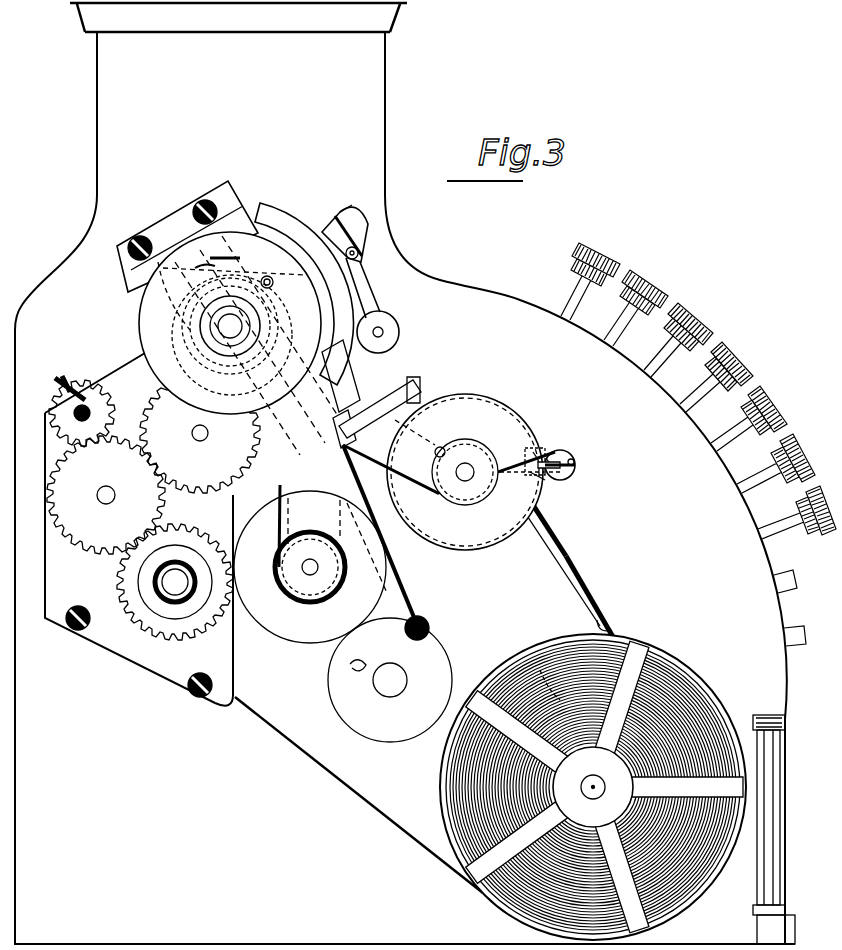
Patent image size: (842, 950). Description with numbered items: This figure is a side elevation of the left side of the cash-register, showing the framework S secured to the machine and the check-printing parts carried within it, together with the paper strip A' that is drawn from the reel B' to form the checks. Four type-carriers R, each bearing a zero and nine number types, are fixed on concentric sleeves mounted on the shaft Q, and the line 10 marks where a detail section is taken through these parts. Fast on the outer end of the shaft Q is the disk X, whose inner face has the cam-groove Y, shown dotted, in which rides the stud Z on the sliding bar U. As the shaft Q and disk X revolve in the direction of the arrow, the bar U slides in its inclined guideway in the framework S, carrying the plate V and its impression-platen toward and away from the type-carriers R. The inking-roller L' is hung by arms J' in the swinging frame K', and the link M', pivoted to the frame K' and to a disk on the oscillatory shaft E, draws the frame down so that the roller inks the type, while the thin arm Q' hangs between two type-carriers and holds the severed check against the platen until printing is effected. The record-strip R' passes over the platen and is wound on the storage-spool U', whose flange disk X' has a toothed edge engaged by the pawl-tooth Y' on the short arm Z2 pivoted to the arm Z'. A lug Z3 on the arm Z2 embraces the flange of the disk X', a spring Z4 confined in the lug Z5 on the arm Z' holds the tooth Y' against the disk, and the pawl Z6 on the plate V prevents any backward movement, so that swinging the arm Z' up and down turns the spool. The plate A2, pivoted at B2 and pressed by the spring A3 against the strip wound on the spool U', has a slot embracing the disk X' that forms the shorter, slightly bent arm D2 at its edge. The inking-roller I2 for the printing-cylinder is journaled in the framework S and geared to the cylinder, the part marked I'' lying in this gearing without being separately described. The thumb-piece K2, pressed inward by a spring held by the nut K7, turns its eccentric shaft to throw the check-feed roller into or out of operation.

The section line 10 is at (190, 272).
The stud Z is at (170, 238).
The framework S is at (282, 646).
The sliding bar U is at (225, 345).
The cam-groove Y is at (179, 303).
The shaft Q is at (230, 326).
The disk X is at (230, 323).
The type-carriers R is at (302, 394).
The swinging frame K' is at (345, 224).
The thin arm Q' is at (387, 216).
The arms J' is at (390, 500).
The inking-roller L' is at (393, 332).
The plate V is at (408, 396).
The pawl Z6 is at (337, 415).
The disk X' is at (465, 461).
The storage-spool U' is at (465, 489).
The record-strip R' is at (449, 480).
The short arm Z2 is at (528, 452).
The lug Z3 is at (530, 475).
The spring Z4 is at (535, 450).
The lug Z5 is at (548, 460).
The pawl-tooth Y' is at (556, 452).
The arm Z' is at (578, 471).
The arm D2 is at (546, 509).
The plate A2 is at (579, 598).
The spring A3 is at (613, 630).
The link M' is at (396, 542).
The oscillatory shaft E is at (390, 680).
The inking-roller I2 is at (96, 401).
The gear wheel I'' is at (106, 495).
The nut K7 is at (165, 580).
The thumb-piece K2 is at (181, 624).
The paper strip A' is at (405, 473).
The reel B' is at (593, 787).
The pivot B2 is at (552, 685).